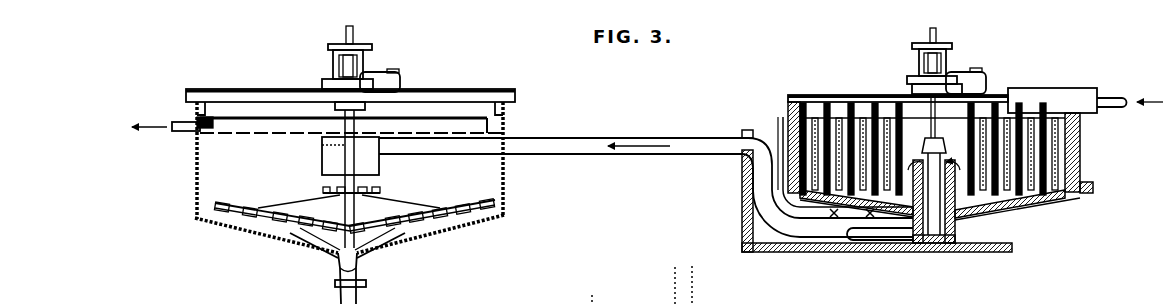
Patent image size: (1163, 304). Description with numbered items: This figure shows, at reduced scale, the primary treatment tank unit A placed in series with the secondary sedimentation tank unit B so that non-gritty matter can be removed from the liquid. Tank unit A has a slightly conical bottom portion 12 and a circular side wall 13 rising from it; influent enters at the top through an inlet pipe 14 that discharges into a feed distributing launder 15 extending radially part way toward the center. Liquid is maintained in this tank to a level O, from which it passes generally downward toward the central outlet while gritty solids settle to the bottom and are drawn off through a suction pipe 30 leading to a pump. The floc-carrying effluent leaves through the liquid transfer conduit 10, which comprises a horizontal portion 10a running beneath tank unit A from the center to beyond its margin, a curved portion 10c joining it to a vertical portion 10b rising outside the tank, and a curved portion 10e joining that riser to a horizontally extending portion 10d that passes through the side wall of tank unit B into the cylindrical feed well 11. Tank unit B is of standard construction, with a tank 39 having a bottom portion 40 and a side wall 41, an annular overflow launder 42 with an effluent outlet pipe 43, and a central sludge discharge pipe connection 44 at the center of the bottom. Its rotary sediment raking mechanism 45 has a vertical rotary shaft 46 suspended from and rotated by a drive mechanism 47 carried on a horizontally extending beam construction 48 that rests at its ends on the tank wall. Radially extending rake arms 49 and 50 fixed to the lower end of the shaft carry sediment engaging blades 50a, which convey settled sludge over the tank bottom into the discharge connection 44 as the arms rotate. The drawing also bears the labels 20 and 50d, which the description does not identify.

The liquid transfer conduit 10 is at (656, 158).
The horizontal portion of conduit 10a is at (838, 232).
The vertical portion of conduit 10b is at (758, 188).
The curved portion of conduit 10c is at (763, 225).
The horizontally extending portion of conduit 10d is at (673, 142).
The curved portion of conduit 10e is at (753, 138).
The feed well 11 is at (322, 157).
The bottom portion 12 is at (983, 208).
The circular side wall 13 is at (1080, 148).
The inlet pipe 14 is at (1114, 100).
The feed distributing launder 15 is at (1040, 88).
The pump valve assembly 20 is at (955, 70).
The suction pipe 30 is at (777, 117).
The tank 39 is at (186, 228).
The bottom portion 40 is at (422, 233).
The side wall 41 is at (197, 165).
The annular overflow launder 42 is at (196, 121).
The effluent outlet pipe 43 is at (182, 132).
The central sludge discharge pipe connection 44 is at (340, 260).
The rotary sediment raking mechanism 45 is at (333, 146).
The vertical rotary shaft 46 is at (354, 165).
The drive mechanism 47 is at (332, 77).
The horizontally extending beam construction 48 is at (246, 89).
The rake arm 49 is at (225, 206).
The rake arm 50 is at (431, 216).
The sediment engaging blades 50a is at (445, 214).
The rake arm 50d is at (282, 213).
The treatment tank unit A is at (1004, 84).
The sedimentation tank unit B is at (425, 80).
The liquid level O is at (840, 116).